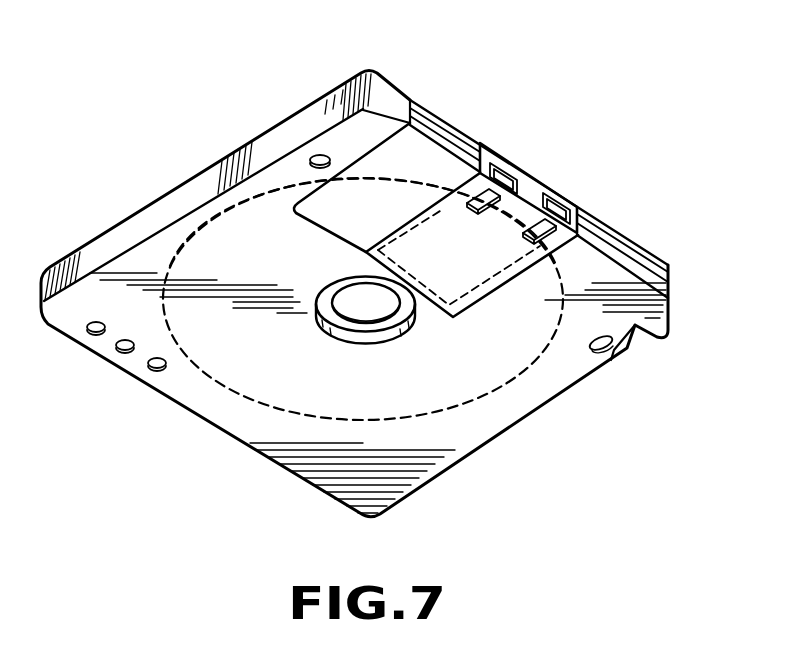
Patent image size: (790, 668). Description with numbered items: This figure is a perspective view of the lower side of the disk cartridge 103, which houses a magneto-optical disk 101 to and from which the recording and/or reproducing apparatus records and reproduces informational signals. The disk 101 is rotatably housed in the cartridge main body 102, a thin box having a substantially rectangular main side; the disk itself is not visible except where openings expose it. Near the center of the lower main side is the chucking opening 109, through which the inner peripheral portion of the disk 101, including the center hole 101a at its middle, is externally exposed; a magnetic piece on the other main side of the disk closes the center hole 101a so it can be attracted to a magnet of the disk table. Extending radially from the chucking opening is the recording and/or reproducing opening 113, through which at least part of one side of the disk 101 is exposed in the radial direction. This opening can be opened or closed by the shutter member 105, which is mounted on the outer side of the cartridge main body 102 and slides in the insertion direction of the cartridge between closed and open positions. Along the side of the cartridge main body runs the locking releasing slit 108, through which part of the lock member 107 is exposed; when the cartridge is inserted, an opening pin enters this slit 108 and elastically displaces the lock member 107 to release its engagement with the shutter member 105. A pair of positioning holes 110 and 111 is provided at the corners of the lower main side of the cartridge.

The magneto-optical disk 101 is at (227, 253).
The center hole 101a is at (357, 318).
The cartridge main body 102 is at (287, 152).
The disk cartridge 103 is at (437, 85).
The shutter member 105 is at (523, 210).
The lock member 107 is at (584, 216).
The locking releasing slit 108 is at (633, 253).
The chucking opening 109 is at (397, 336).
The positioning hole 110 is at (320, 155).
The positioning hole 111 is at (612, 352).
The recording and/or reproducing opening 113 is at (496, 277).